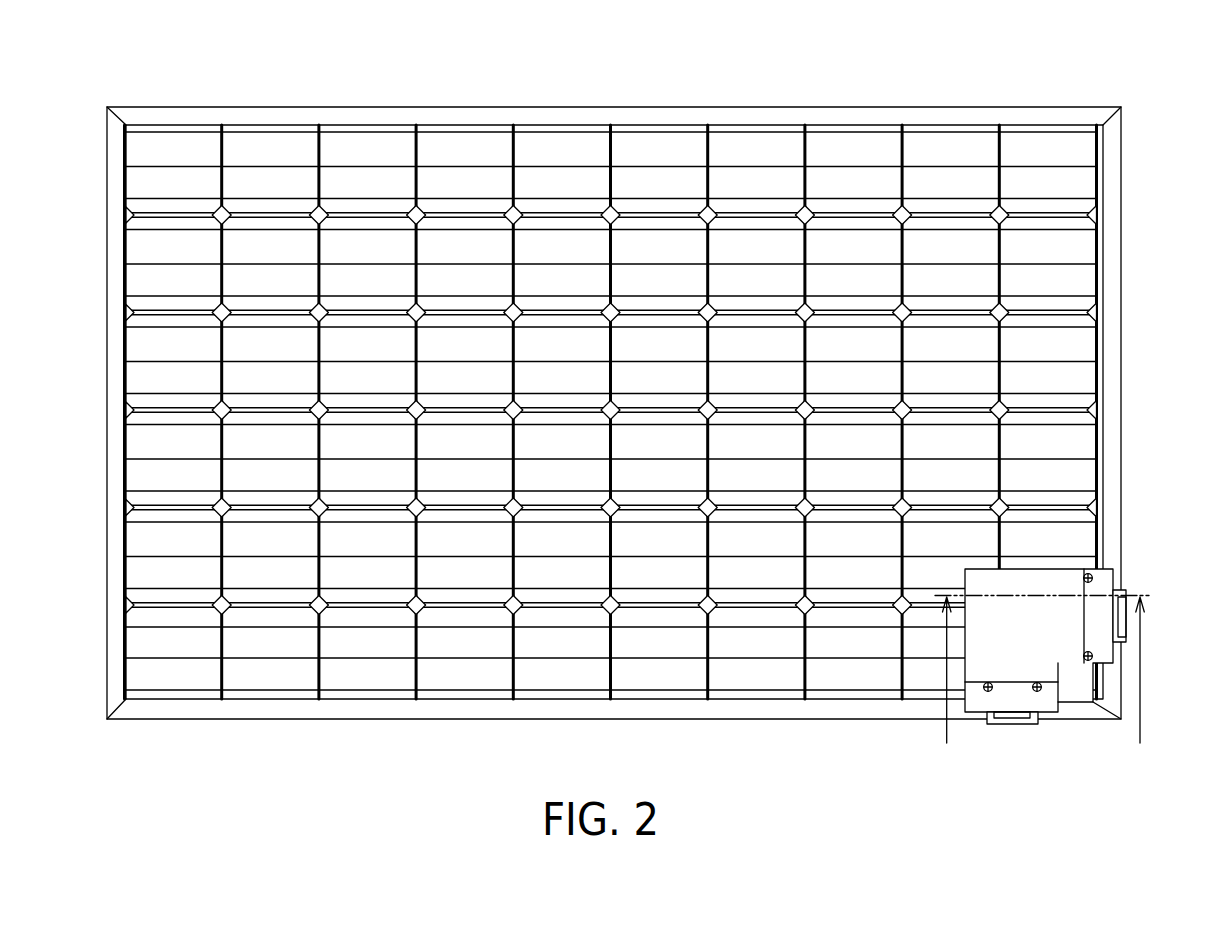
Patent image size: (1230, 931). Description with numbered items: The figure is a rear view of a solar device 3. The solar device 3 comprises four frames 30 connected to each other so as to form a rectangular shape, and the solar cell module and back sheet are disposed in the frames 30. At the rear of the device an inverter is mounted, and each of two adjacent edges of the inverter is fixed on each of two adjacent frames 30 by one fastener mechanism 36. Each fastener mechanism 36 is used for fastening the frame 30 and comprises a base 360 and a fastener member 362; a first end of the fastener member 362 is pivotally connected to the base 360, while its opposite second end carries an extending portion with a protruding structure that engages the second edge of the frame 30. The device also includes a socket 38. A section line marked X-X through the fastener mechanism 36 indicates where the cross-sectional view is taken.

The solar device 3 is at (172, 90).
The frame 30 is at (1110, 303).
The fastener mechanism 36 is at (1107, 563).
The base 360 is at (1107, 572).
The fastener member 362 is at (1125, 623).
The socket 38 is at (1028, 650).